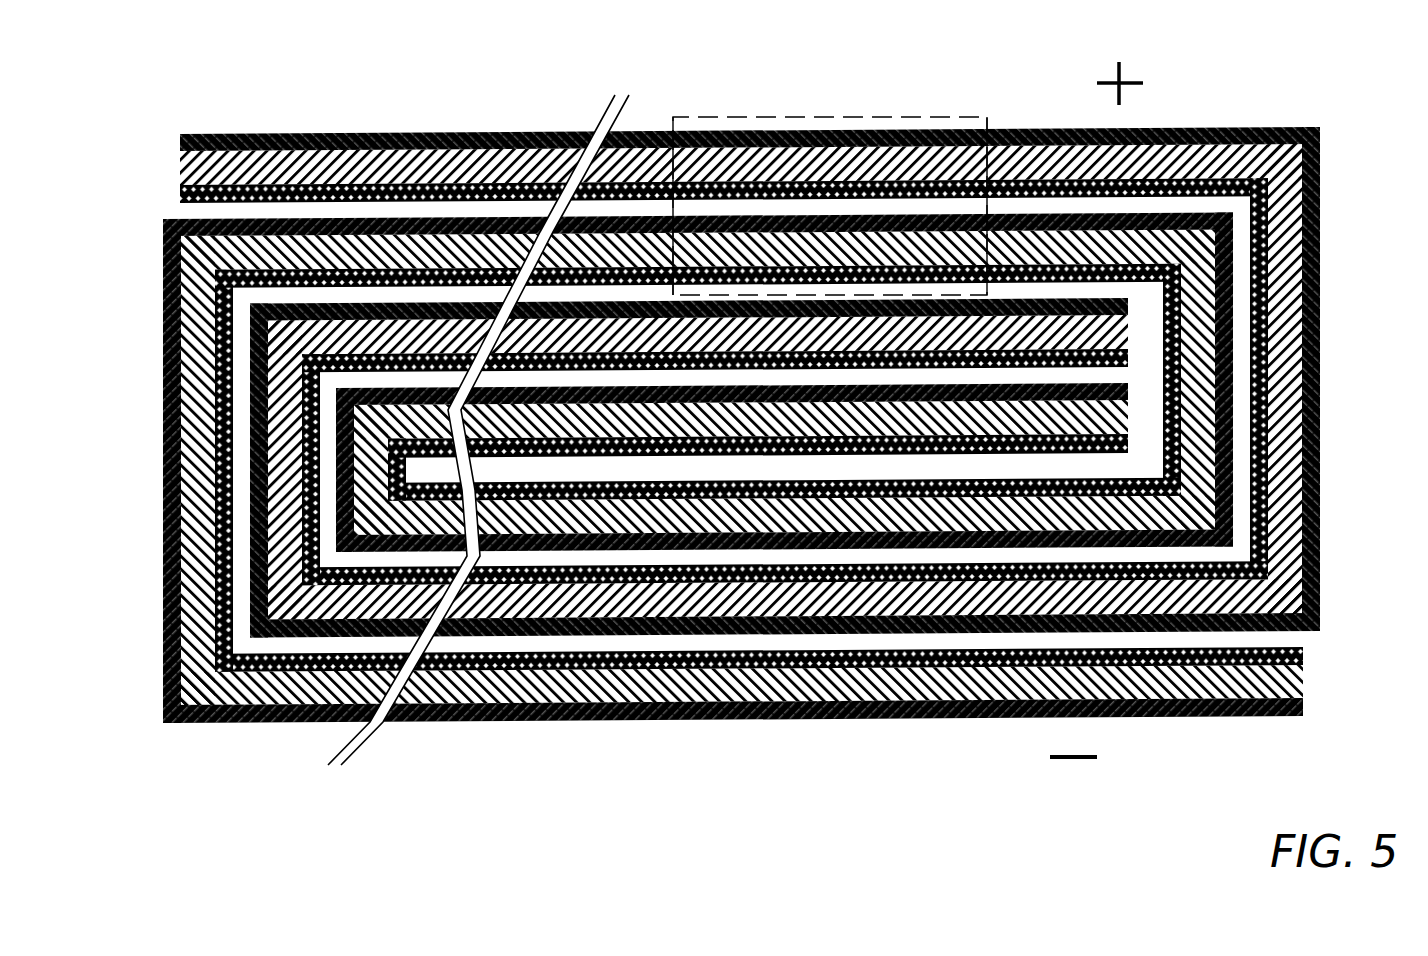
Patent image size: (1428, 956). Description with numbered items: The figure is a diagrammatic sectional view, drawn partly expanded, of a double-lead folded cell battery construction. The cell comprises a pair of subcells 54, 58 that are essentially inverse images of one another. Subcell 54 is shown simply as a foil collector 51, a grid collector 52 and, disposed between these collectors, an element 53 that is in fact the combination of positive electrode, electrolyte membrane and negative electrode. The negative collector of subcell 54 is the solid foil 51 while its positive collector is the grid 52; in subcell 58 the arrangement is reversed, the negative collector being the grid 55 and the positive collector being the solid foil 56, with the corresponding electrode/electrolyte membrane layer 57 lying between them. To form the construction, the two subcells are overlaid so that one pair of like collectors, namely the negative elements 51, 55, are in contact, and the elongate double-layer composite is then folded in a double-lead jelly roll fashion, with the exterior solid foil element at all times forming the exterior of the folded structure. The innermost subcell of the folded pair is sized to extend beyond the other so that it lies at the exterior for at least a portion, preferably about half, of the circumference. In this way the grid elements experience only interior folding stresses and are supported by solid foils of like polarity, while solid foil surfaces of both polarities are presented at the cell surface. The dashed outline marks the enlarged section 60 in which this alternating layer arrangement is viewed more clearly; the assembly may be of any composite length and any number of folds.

The foil collector 51 is at (1300, 705).
The grid collector 52 is at (1310, 660).
The positive electrode/electrolyte membrane/negative electrode element 53 is at (1310, 690).
The subcell 54 is at (733, 481).
The grid 55 is at (178, 192).
The solid foil 56 is at (178, 145).
The positive electrode membrane 57 is at (180, 163).
The subcell 58 is at (756, 365).
The enlarged section 60 is at (878, 117).